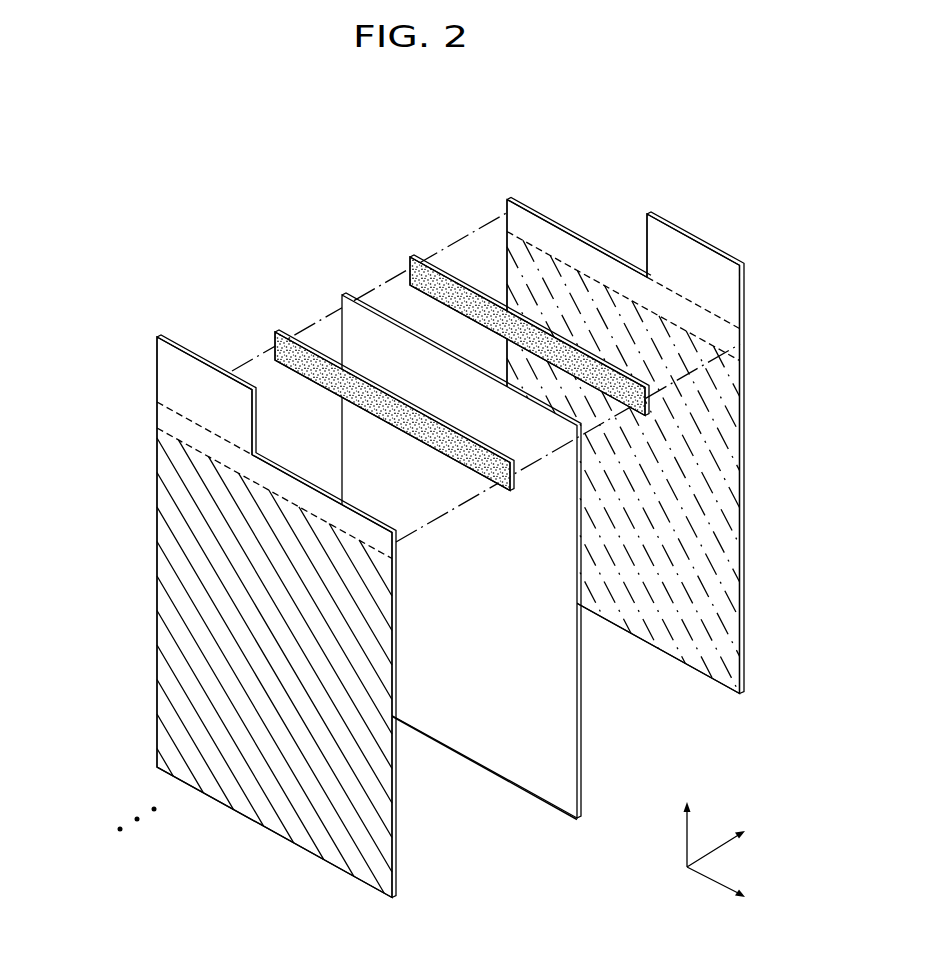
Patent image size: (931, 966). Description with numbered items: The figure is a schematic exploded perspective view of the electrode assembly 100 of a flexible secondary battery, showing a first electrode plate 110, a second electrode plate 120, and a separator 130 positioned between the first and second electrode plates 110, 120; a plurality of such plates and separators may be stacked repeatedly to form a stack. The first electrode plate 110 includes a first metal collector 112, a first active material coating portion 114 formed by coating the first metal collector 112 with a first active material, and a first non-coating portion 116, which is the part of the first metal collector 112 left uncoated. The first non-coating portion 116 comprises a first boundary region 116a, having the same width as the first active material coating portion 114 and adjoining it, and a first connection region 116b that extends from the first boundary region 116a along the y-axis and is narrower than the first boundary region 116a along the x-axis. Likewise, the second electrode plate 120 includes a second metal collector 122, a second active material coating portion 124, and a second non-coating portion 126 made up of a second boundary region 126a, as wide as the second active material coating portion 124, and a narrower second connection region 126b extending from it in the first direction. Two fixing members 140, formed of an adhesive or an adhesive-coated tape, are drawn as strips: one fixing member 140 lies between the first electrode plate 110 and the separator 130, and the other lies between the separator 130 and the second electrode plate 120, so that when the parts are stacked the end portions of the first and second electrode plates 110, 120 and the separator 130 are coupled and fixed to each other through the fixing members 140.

The electrode assembly 100 is at (192, 191).
The first electrode plate 110 is at (209, 577).
The first metal collector 112 is at (157, 529).
The first active material coating portion 114 is at (175, 620).
The first non-coating portion 116 is at (137, 355).
The first boundary region 116a is at (177, 424).
The first connection region 116b is at (177, 385).
The second electrode plate 120 is at (664, 410).
The second metal collector 122 is at (740, 423).
The second active material coating portion 124 is at (727, 496).
The second non-coating portion 126 is at (664, 253).
The second boundary region 126a is at (727, 340).
The second connection region 126b is at (729, 292).
The separator 130 is at (342, 295).
The fixing member 140 is at (410, 257).